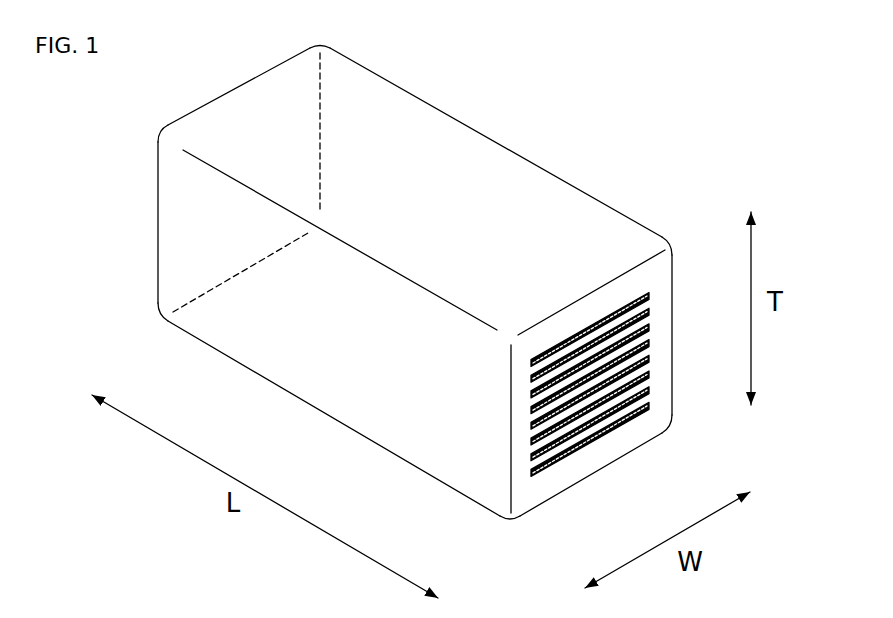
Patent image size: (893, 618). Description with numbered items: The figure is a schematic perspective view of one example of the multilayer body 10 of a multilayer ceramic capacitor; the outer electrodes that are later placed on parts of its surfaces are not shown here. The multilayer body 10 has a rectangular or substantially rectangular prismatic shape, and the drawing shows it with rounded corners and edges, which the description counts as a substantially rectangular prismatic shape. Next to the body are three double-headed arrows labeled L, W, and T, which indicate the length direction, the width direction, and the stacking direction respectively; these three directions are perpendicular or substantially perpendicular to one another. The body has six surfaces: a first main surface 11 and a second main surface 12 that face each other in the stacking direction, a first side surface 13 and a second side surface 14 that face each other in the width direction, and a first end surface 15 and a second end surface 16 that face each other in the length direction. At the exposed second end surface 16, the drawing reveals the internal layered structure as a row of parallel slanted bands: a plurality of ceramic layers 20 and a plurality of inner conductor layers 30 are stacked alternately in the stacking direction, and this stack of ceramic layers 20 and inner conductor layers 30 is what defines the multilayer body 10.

The multilayer body 10 is at (665, 143).
The first main surface 11 is at (430, 137).
The second main surface 12 is at (422, 428).
The first side surface 13 is at (253, 345).
The second side surface 14 is at (525, 203).
The first end surface 15 is at (178, 184).
The second end surface 16 is at (660, 317).
The ceramic layers 20 is at (562, 433).
The inner conductor layers 30 is at (595, 423).